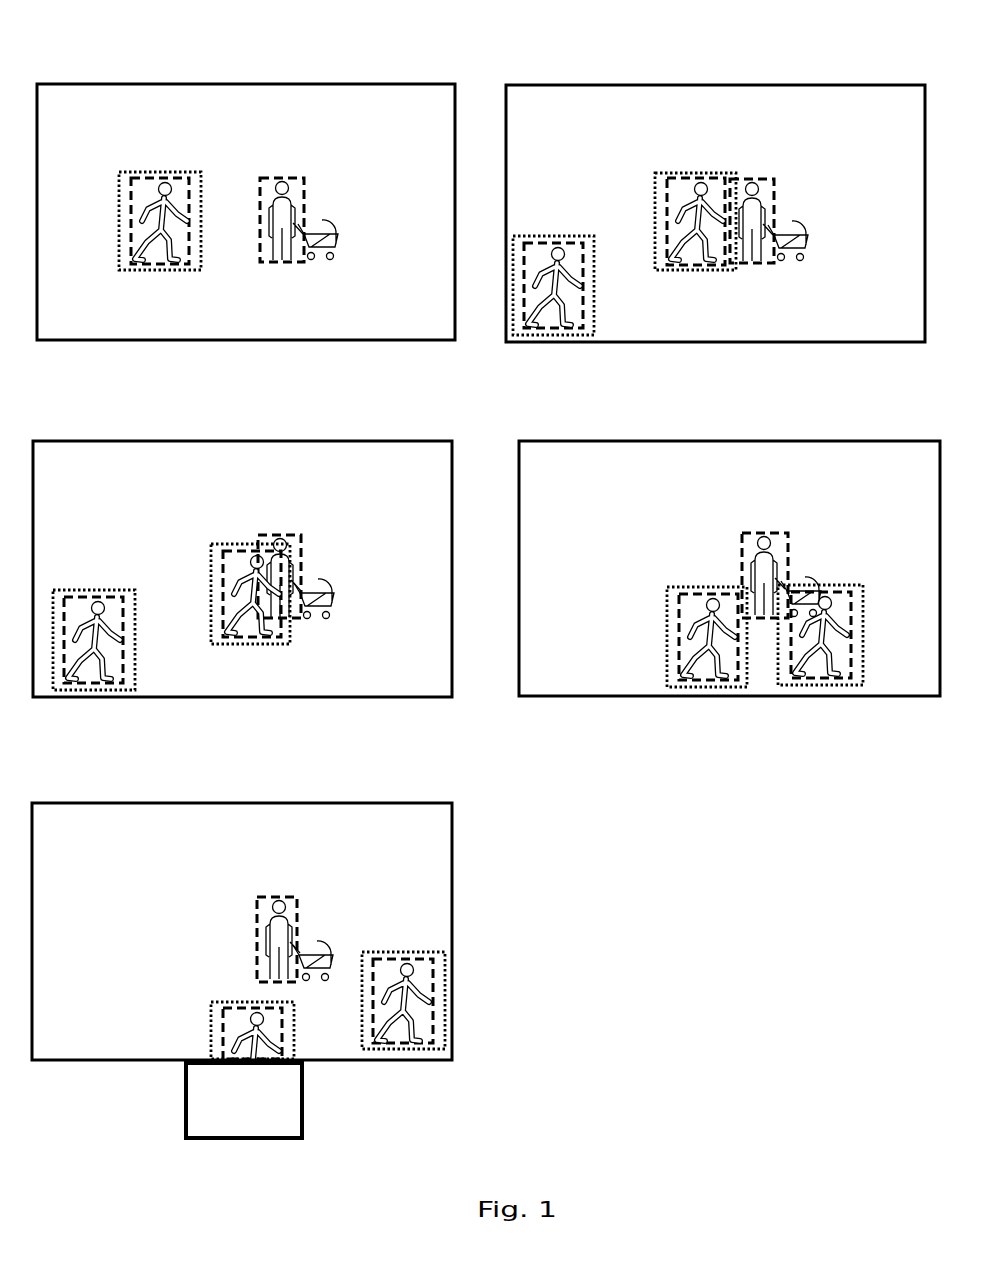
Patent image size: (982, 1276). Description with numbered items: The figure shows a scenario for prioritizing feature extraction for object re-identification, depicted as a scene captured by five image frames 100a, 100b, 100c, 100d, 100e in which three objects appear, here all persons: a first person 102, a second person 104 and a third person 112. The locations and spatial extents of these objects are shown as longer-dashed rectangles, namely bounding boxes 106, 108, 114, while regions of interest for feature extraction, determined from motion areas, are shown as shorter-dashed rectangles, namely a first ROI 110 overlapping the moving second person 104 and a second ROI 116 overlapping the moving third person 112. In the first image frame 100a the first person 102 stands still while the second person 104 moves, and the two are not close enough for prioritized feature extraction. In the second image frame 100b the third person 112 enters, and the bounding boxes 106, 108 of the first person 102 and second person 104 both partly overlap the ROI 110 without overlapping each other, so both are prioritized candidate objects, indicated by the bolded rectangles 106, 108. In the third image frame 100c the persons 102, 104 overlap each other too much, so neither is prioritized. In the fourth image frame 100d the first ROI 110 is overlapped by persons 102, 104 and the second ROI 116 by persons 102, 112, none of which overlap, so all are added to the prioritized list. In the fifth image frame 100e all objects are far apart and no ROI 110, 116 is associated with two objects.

The first image frame 100a is at (347, 83).
The second image frame 100b is at (818, 85).
The third image frame 100c is at (343, 441).
The fourth image frame 100d is at (835, 441).
The fifth image frame 100e is at (350, 803).
The first person 102 is at (297, 203).
The second person 104 is at (173, 200).
The bounding box 106 is at (287, 263).
The bounding box 108 is at (188, 218).
The first region of interest 110 is at (173, 272).
The third person 112 is at (560, 323).
The bounding box 114 is at (545, 241).
The second region of interest 116 is at (584, 333).